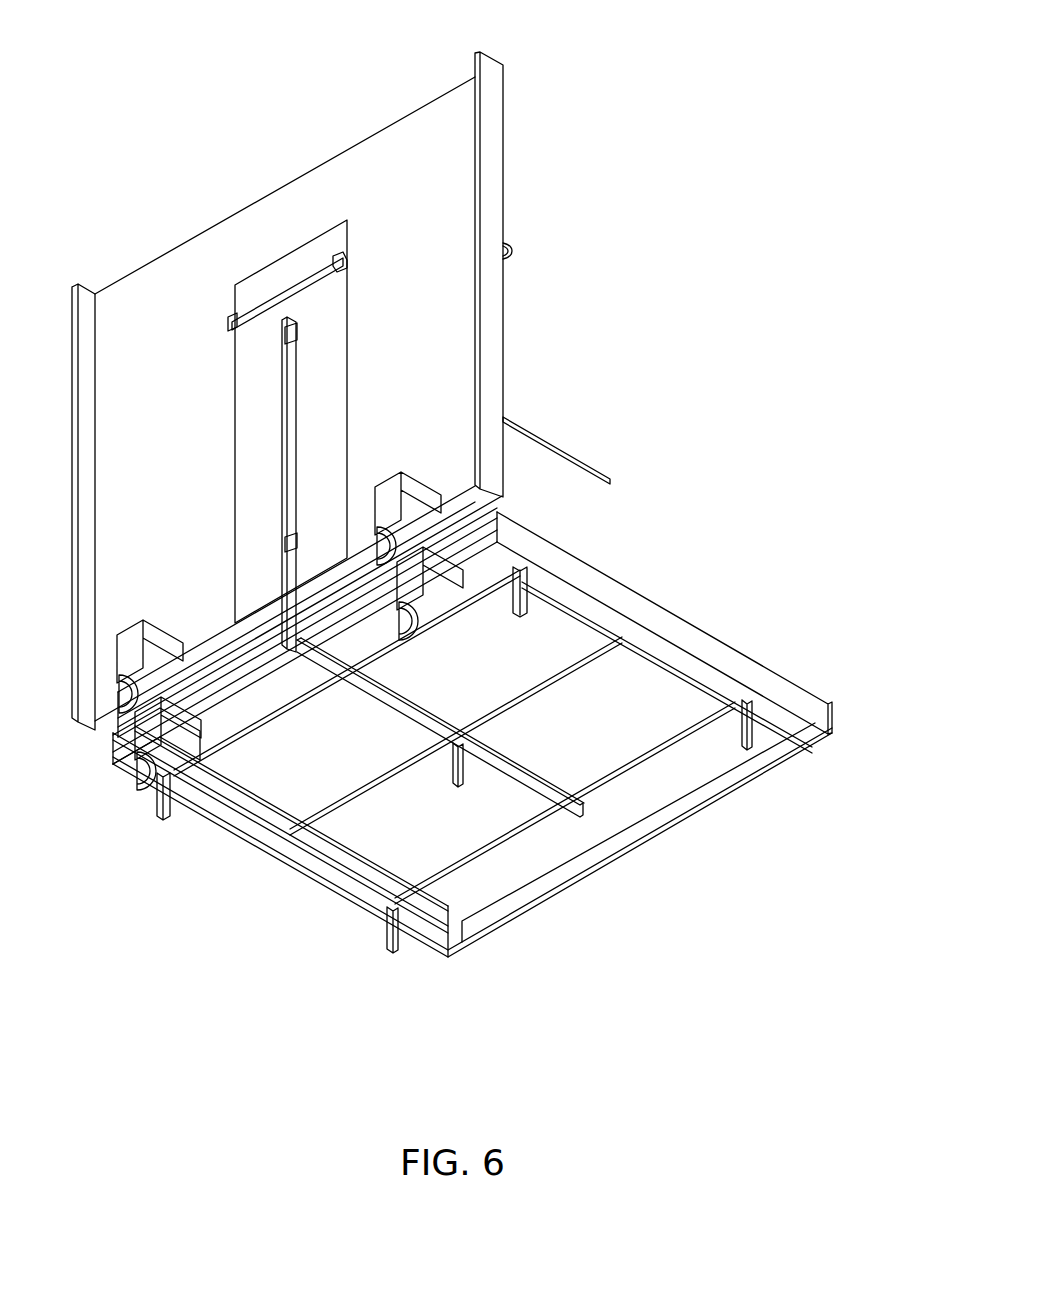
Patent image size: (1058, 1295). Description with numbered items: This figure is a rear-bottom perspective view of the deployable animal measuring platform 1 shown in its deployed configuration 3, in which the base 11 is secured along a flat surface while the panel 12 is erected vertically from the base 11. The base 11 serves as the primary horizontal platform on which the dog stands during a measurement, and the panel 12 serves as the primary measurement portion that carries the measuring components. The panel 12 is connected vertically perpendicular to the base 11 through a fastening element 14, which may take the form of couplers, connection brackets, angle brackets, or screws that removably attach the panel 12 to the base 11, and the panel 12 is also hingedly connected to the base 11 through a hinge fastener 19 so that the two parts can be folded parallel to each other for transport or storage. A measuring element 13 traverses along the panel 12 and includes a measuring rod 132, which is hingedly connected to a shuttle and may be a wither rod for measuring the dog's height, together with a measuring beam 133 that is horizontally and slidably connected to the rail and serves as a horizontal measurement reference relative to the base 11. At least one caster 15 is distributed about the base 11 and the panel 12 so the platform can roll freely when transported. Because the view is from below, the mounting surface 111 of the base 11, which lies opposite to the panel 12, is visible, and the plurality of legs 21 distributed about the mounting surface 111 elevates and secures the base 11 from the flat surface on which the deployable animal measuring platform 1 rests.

The deployable animal measuring platform 1 is at (694, 196).
The deployed configuration 3 is at (286, 74).
The base 11 is at (698, 623).
The mounting surface 111 is at (803, 750).
The panel 12 is at (507, 133).
The measuring element 13 is at (626, 363).
The measuring rod 132 is at (530, 424).
The measuring beam 133 is at (512, 252).
The fastening element 14 is at (278, 437).
The caster 15 is at (126, 625).
The hinge fastener 19 is at (195, 640).
The legs 21 is at (159, 827).